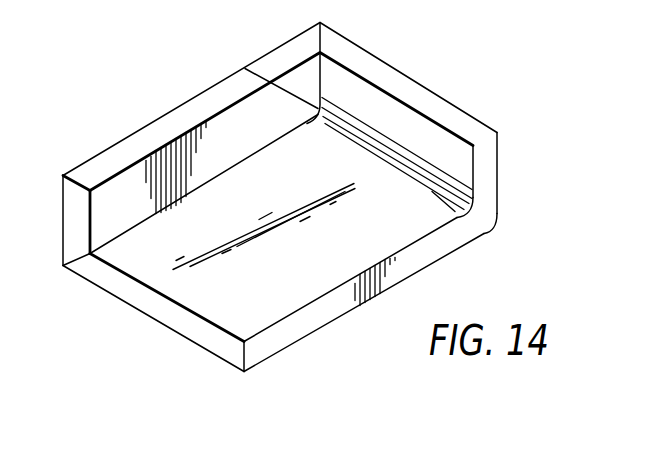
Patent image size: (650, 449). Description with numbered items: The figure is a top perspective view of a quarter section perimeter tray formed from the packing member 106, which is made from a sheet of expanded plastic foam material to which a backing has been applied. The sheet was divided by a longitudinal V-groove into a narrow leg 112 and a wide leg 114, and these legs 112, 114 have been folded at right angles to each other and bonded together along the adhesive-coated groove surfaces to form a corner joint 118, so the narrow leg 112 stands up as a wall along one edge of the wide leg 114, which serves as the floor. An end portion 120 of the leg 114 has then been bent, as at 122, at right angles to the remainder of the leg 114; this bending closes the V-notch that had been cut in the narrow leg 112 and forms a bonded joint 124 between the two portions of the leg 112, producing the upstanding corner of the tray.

The packing member 106 is at (449, 63).
The narrow leg 112 is at (100, 157).
The wide leg 114 is at (312, 288).
The corner joint 118 is at (185, 200).
The end portion 120 is at (499, 173).
The bend 122 is at (486, 218).
The bonded joint 124 is at (300, 104).